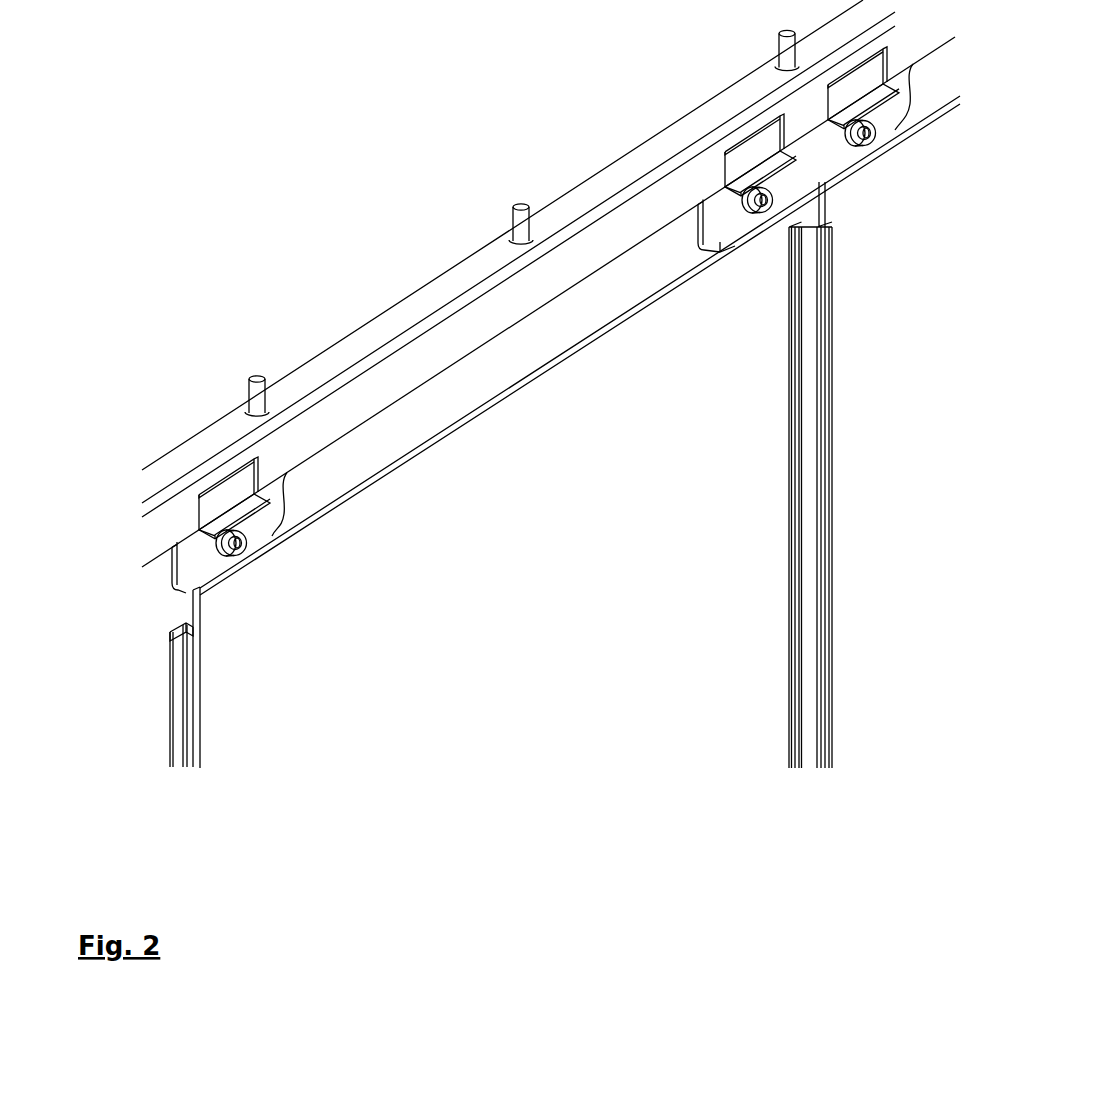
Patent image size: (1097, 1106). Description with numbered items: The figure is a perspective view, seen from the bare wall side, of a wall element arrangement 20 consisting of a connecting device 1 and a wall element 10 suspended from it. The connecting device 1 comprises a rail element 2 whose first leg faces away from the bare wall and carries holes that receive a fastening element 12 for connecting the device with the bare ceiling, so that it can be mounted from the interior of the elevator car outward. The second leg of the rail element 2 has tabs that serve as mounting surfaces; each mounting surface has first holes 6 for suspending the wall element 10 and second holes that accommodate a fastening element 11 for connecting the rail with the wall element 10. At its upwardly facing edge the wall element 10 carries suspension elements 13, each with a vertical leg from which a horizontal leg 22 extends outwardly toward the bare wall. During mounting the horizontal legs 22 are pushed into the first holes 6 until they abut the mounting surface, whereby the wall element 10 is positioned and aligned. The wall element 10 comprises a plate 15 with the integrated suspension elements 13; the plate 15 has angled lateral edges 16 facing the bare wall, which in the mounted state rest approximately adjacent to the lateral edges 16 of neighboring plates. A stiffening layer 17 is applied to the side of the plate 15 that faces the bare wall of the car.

The connecting device 1 is at (168, 449).
The rail element 2 is at (232, 432).
The first holes 6 is at (743, 150).
The wall element 10 is at (555, 739).
The fastening element 11 is at (762, 201).
The fastening element 12 is at (519, 207).
The suspension elements 13 is at (843, 168).
The plate 15 is at (180, 626).
The lateral edges 16 is at (190, 703).
The stiffening layer 17 is at (698, 348).
The wall element arrangement 20 is at (323, 239).
The horizontal leg 22 is at (247, 511).